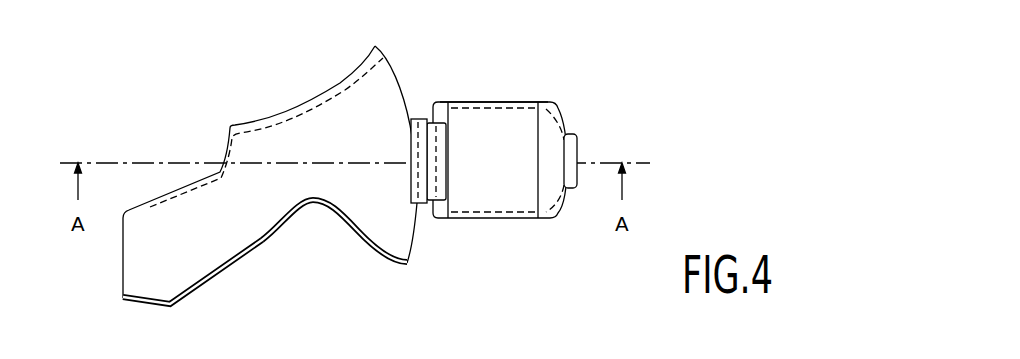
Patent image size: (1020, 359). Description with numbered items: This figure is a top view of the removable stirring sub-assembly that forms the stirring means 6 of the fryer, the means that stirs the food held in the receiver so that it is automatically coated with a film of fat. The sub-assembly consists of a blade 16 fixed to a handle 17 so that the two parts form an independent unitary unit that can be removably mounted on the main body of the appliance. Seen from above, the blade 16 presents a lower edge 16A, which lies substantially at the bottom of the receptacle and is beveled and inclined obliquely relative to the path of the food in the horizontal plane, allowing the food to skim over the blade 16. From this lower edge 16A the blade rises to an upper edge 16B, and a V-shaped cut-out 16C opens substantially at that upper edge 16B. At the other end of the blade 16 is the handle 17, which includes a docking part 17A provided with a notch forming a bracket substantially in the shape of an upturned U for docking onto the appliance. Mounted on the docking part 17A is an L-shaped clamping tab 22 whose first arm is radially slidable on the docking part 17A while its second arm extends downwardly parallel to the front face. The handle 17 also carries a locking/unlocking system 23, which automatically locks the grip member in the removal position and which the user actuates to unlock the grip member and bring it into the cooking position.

The stirring means 6 is at (210, 122).
The blade 16 is at (148, 280).
The lower edge 16A is at (315, 103).
The upper edge 16B is at (233, 267).
The V-shaped cut-out 16C is at (313, 215).
The handle 17 is at (527, 93).
The docking part 17A is at (477, 101).
The clamping tab 22 is at (422, 117).
The locking/unlocking system 23 is at (575, 145).